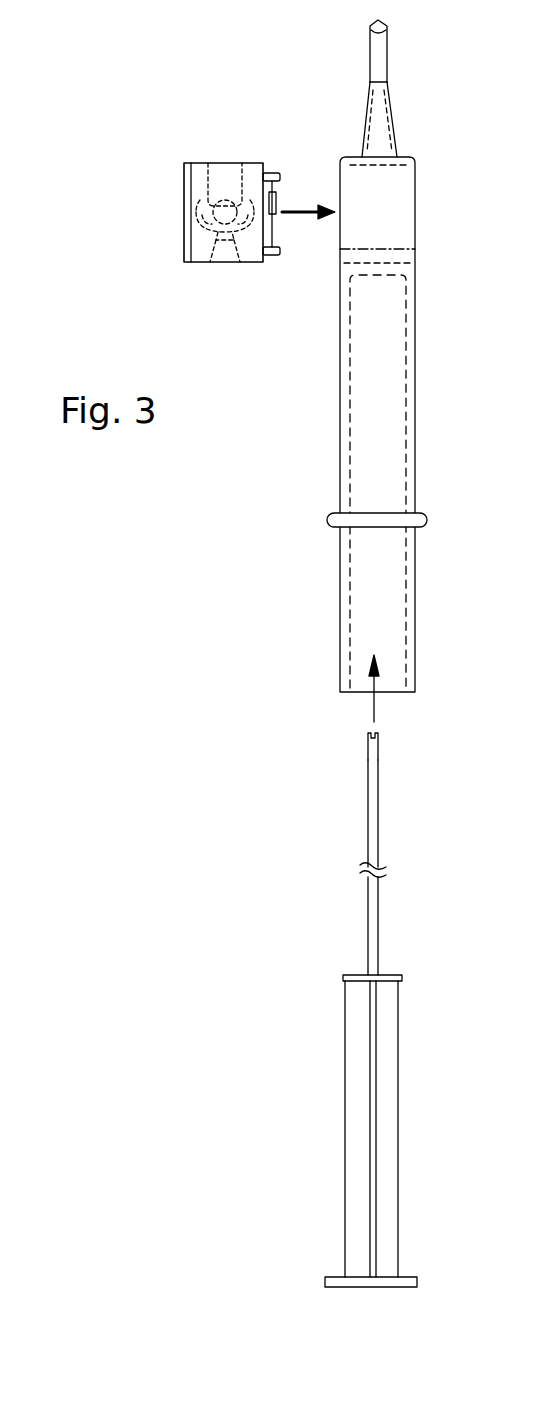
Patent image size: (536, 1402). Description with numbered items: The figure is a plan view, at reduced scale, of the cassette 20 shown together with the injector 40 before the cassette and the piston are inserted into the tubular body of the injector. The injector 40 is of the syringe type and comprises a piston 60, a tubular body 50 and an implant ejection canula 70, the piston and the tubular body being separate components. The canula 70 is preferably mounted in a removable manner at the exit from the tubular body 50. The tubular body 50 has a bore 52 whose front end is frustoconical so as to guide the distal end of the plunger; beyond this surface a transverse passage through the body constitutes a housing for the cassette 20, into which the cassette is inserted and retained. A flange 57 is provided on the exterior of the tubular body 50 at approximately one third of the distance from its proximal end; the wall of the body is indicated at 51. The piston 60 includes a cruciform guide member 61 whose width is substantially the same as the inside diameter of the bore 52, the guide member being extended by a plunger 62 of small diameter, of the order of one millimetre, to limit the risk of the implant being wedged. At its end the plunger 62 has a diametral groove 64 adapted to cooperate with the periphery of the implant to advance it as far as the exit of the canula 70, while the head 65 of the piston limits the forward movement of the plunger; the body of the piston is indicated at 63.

The cassette 20 is at (202, 163).
The injector 40 is at (318, 977).
The tubular body 50 is at (395, 356).
The tube wall 51 is at (416, 462).
The bore 52 is at (352, 414).
The flange 57 is at (327, 521).
The piston 60 is at (378, 1138).
The cruciform guide member 61 is at (398, 1220).
The plunger 62 is at (378, 926).
The plunger body 63 is at (355, 1081).
The diametral groove 64 is at (376, 730).
The head 65 is at (395, 1290).
The implant ejection canula 70 is at (392, 103).